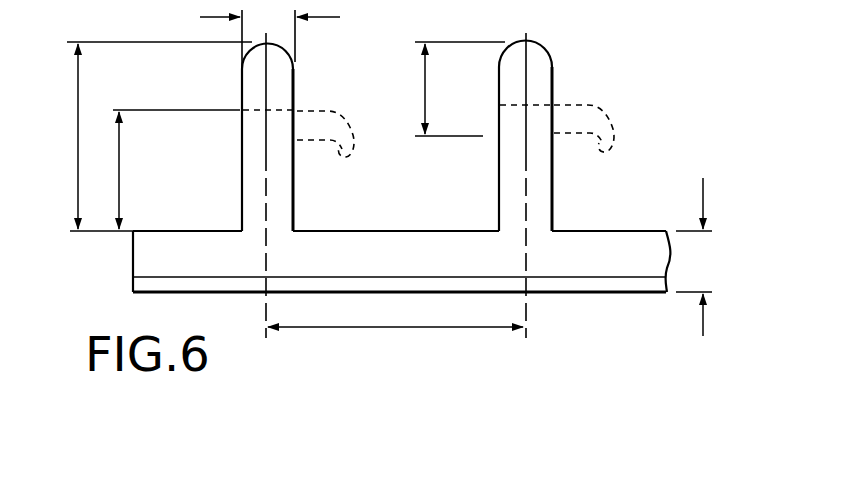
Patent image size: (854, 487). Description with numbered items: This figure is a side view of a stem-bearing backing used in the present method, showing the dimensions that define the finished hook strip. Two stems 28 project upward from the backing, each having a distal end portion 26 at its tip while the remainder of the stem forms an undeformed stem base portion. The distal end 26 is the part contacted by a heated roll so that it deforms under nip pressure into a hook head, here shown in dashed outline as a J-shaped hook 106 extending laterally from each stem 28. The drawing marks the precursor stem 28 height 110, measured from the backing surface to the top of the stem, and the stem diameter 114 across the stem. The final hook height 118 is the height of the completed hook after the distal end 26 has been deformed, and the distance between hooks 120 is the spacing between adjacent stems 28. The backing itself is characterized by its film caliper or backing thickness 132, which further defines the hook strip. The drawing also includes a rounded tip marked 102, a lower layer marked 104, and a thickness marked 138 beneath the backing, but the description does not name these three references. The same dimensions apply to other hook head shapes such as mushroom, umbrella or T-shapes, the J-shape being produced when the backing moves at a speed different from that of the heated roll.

The distal end 26 is at (458, 89).
The stem 28 is at (554, 172).
The rounded fin tip 102 is at (258, 80).
The base plate 104 is at (150, 254).
The J-shaped hook 106 is at (339, 112).
The precursor stem height 110 is at (78, 110).
The stem diameter 114 is at (270, 36).
The final hook height 118 is at (120, 175).
The distance between hooks 120 is at (414, 327).
The backing thickness 132 is at (703, 190).
The bottom layer thickness 138 is at (585, 283).